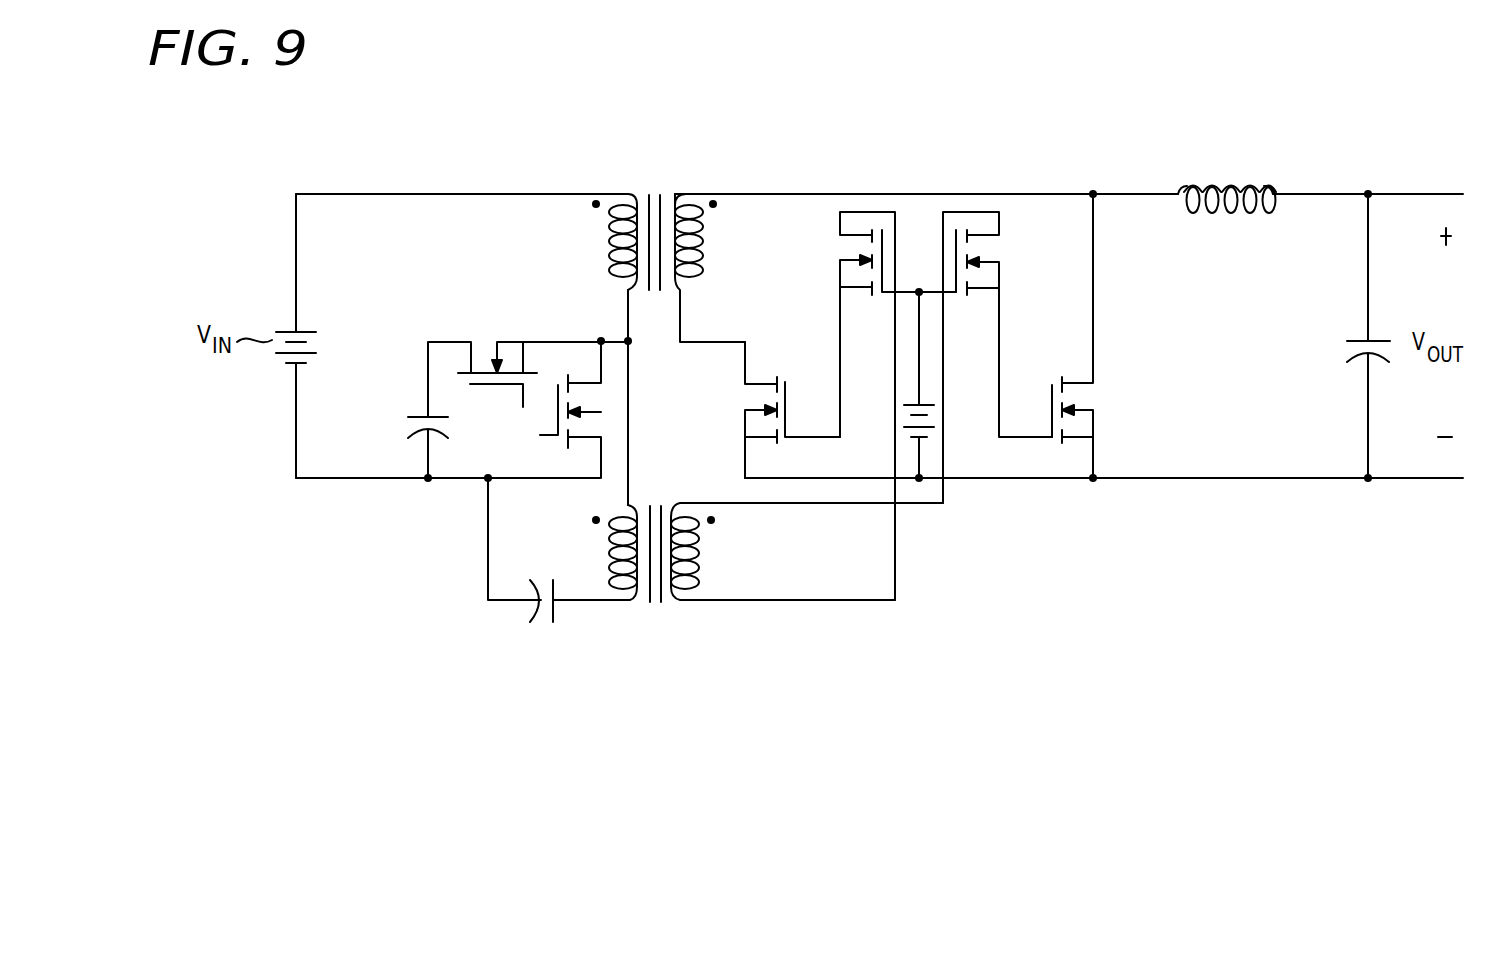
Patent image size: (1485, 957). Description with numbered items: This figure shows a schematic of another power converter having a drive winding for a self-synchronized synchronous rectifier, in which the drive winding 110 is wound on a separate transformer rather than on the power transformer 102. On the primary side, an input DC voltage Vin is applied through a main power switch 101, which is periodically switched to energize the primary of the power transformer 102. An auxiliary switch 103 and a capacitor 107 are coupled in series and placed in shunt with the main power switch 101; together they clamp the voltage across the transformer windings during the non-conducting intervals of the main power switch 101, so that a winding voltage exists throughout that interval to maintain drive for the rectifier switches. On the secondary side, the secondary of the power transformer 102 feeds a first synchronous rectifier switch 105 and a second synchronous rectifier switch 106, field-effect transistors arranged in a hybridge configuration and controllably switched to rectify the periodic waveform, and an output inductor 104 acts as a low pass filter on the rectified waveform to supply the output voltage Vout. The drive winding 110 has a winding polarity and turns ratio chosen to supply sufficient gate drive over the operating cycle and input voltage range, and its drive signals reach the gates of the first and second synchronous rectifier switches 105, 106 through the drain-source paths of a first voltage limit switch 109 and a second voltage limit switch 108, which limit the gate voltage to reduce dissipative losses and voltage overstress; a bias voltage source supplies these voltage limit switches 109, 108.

The main power switch 101 is at (556, 445).
The power transformer 102 is at (660, 190).
The auxiliary switch 103 is at (510, 340).
The inductor 104 is at (1251, 217).
The first synchronous rectifier switch 105 is at (1095, 423).
The second synchronous rectifier switch 106 is at (745, 411).
The capacitor 107 is at (409, 421).
The second voltage limit switch 108 is at (838, 283).
The first voltage limit switch 109 is at (1000, 275).
The drive winding 110 is at (703, 542).